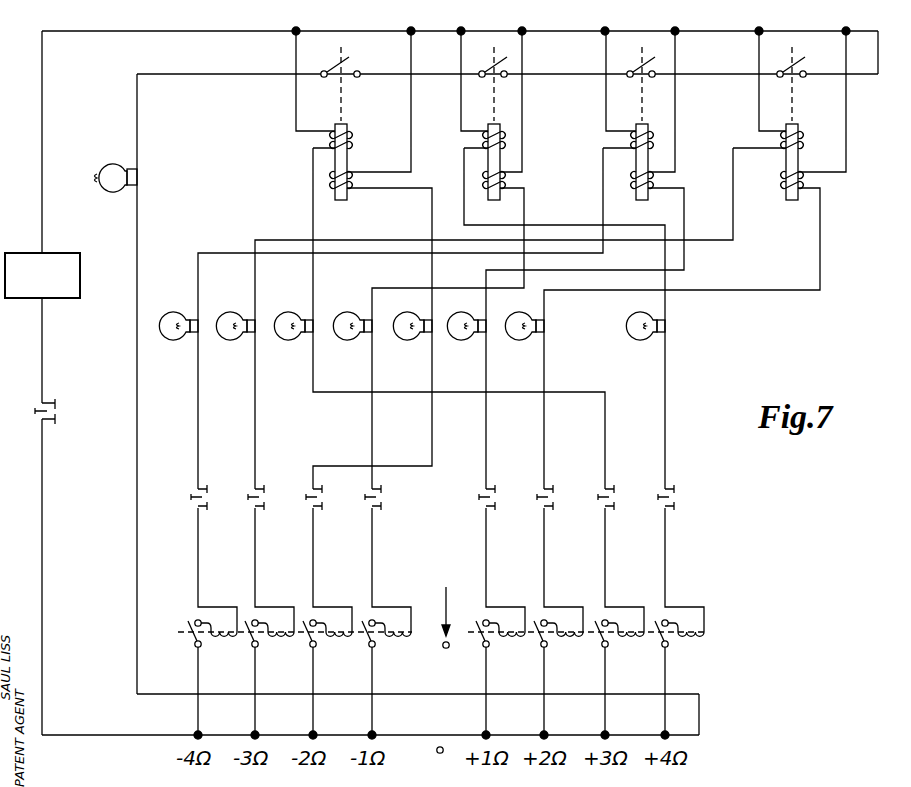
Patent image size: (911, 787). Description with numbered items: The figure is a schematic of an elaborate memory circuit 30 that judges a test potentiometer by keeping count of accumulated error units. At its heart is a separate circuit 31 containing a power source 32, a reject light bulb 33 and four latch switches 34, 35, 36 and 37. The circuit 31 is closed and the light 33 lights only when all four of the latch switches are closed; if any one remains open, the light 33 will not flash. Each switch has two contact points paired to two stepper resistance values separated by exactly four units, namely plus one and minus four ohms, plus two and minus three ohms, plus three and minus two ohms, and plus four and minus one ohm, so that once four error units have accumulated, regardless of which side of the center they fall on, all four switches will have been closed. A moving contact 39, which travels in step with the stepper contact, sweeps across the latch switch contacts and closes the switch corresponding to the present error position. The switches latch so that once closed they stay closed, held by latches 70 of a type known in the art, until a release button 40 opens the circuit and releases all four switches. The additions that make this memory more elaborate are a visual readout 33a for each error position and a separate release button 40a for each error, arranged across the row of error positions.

The memory circuit 30 is at (271, 31).
The separate circuit 31 is at (271, 74).
The power source 32 is at (32, 253).
The light bulb 33 is at (99, 165).
The visual readout 33a is at (162, 321).
The latch switch 34 is at (494, 124).
The latch switch 35 is at (341, 124).
The latch switch 36 is at (642, 124).
The latch switch 37 is at (792, 124).
The contact 39 is at (448, 594).
The release button 40 is at (40, 403).
The release button 40a is at (190, 499).
The latch 70 is at (219, 639).